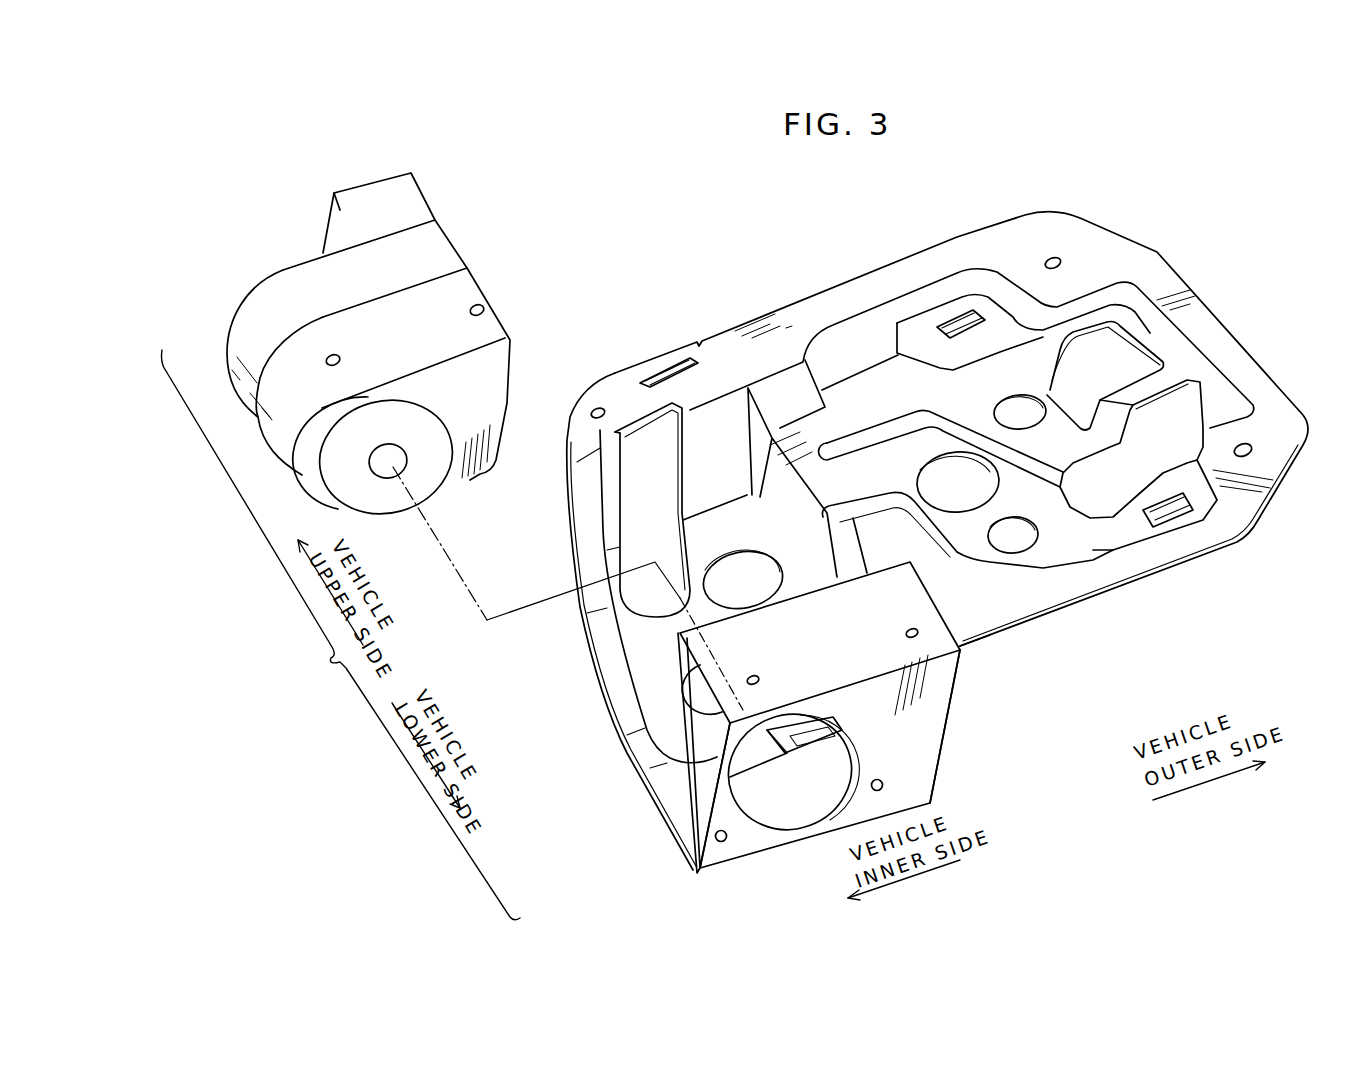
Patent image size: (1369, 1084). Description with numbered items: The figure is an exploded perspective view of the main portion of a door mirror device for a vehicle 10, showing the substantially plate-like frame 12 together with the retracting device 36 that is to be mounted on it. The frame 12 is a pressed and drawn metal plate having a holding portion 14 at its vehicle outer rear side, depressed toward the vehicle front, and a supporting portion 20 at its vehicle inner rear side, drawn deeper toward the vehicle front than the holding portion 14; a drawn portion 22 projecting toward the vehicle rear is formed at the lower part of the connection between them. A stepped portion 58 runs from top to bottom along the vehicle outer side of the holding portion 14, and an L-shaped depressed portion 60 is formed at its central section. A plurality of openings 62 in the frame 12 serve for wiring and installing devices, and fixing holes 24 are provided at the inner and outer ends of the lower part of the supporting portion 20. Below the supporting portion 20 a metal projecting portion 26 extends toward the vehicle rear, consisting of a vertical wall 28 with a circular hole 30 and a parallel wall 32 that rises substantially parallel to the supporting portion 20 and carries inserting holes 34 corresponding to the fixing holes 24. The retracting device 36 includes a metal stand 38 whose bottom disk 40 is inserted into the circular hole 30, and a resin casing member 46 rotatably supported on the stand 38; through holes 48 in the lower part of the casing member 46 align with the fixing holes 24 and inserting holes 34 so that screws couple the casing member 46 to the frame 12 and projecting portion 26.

The door mirror device for a vehicle 10 is at (685, 223).
The frame 12 is at (997, 223).
The holding portion 14 is at (872, 373).
The supporting portion 20 is at (628, 632).
The drawn portion 22 is at (910, 567).
The fixing holes 24 is at (887, 785).
The projecting portion 26 is at (948, 710).
The vertical wall 28 is at (925, 743).
The circular hole 30 is at (783, 812).
The parallel wall 32 is at (960, 643).
The inserting holes 34 is at (753, 680).
The retracting device 36 is at (283, 268).
The stand 38 is at (453, 463).
The disk 40 is at (388, 461).
The casing member 46 is at (430, 207).
The through holes 48 is at (336, 358).
The stepped portion 58 is at (1033, 360).
The depressed portion 60 is at (893, 420).
The openings 62 is at (1048, 400).